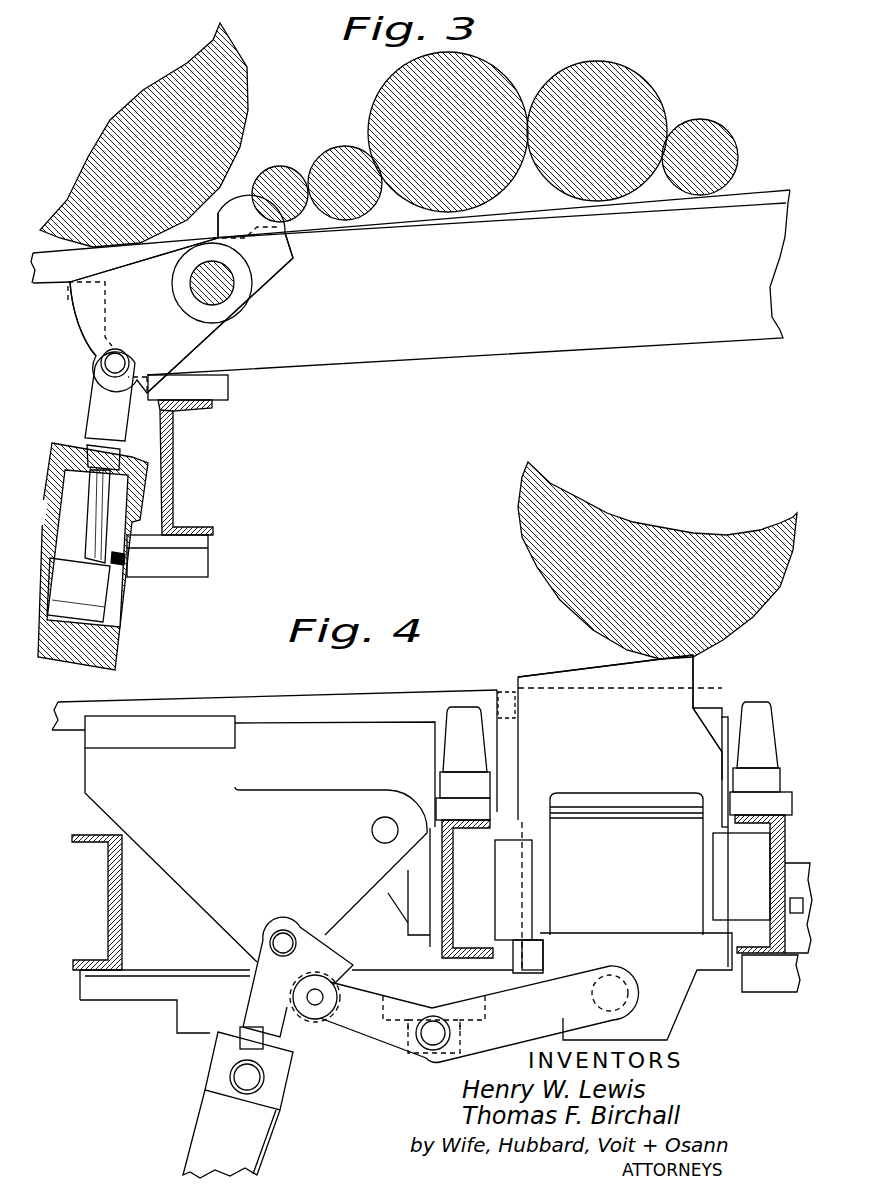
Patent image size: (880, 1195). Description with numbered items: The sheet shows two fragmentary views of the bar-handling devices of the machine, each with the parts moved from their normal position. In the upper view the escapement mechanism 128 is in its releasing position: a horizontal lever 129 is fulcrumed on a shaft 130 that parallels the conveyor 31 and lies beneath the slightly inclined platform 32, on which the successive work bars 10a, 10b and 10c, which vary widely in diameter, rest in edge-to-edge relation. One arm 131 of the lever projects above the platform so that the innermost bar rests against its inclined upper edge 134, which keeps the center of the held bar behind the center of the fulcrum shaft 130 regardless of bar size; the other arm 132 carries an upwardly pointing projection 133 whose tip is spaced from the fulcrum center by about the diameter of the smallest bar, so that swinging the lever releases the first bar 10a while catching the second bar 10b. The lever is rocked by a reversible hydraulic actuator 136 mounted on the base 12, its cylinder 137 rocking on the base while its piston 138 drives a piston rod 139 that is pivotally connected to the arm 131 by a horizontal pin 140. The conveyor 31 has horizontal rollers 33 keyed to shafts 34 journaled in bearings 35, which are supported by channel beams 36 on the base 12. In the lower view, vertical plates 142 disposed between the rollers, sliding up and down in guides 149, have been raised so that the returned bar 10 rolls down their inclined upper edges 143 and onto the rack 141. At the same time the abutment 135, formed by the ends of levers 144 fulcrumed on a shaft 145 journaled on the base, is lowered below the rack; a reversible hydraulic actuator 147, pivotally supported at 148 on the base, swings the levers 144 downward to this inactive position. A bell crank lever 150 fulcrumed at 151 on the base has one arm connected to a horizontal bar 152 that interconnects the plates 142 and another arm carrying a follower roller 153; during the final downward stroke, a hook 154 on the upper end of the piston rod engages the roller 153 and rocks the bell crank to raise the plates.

In FIG. 4, the work bar 10 is at (523, 538).
In FIG. 3, the first bar 10a is at (240, 88).
In FIG. 3, the next bar 10b is at (284, 167).
In FIG. 3, the article 10c is at (347, 152).
In FIG. 3, the base 12 is at (206, 558).
In FIG. 4, the base 12 is at (86, 988).
In FIG. 4, the horizontal conveyor 31 is at (733, 680).
In FIG. 3, the platform 32 is at (421, 230).
In FIG. 4, the horizontal rollers 33 is at (730, 694).
In FIG. 4, the shafts 34 is at (724, 757).
In FIG. 4, the bearings 35 is at (448, 750).
In FIG. 3, the channel beams 36 is at (175, 483).
In FIG. 4, the channel beams 36 is at (452, 900).
In FIG. 3, the escapement mechanism 128 is at (277, 297).
In FIG. 3, the horizontal lever 129 is at (204, 331).
In FIG. 3, the fulcrum shaft 130 is at (228, 279).
In FIG. 3, the lever arm 131 is at (78, 334).
In FIG. 3, the other lever arm 132 is at (288, 260).
In FIG. 3, the projection 133 is at (203, 215).
In FIG. 3, the upper edge 134 is at (120, 264).
In FIG. 4, the abutment 135 is at (192, 716).
In FIG. 3, the reversible hydraulic actuator 136 is at (136, 613).
In FIG. 3, the cylinder 137 is at (127, 561).
In FIG. 3, the piston 138 is at (105, 590).
In FIG. 3, the piston rod 139 is at (95, 409).
In FIG. 3, the horizontal pin 140 is at (106, 372).
In FIG. 4, the rack 141 is at (323, 704).
In FIG. 4, the vertical plates 142 is at (541, 678).
In FIG. 4, the inclined upper edges 143 is at (578, 668).
In FIG. 4, the levers 144 is at (197, 900).
In FIG. 4, the shaft 145 is at (378, 824).
In FIG. 4, the reversible hydraulic actuator 147 is at (212, 1104).
In FIG. 4, the pivotal support 148 is at (238, 1075).
In FIG. 4, the guides 149 is at (533, 887).
In FIG. 4, the bell crank lever 150 is at (382, 1035).
In FIG. 4, the fulcrum 151 is at (430, 1046).
In FIG. 4, the horizontal bar 152 is at (650, 946).
In FIG. 4, the follower roller 153 is at (326, 1020).
In FIG. 4, the hook 154 is at (350, 967).